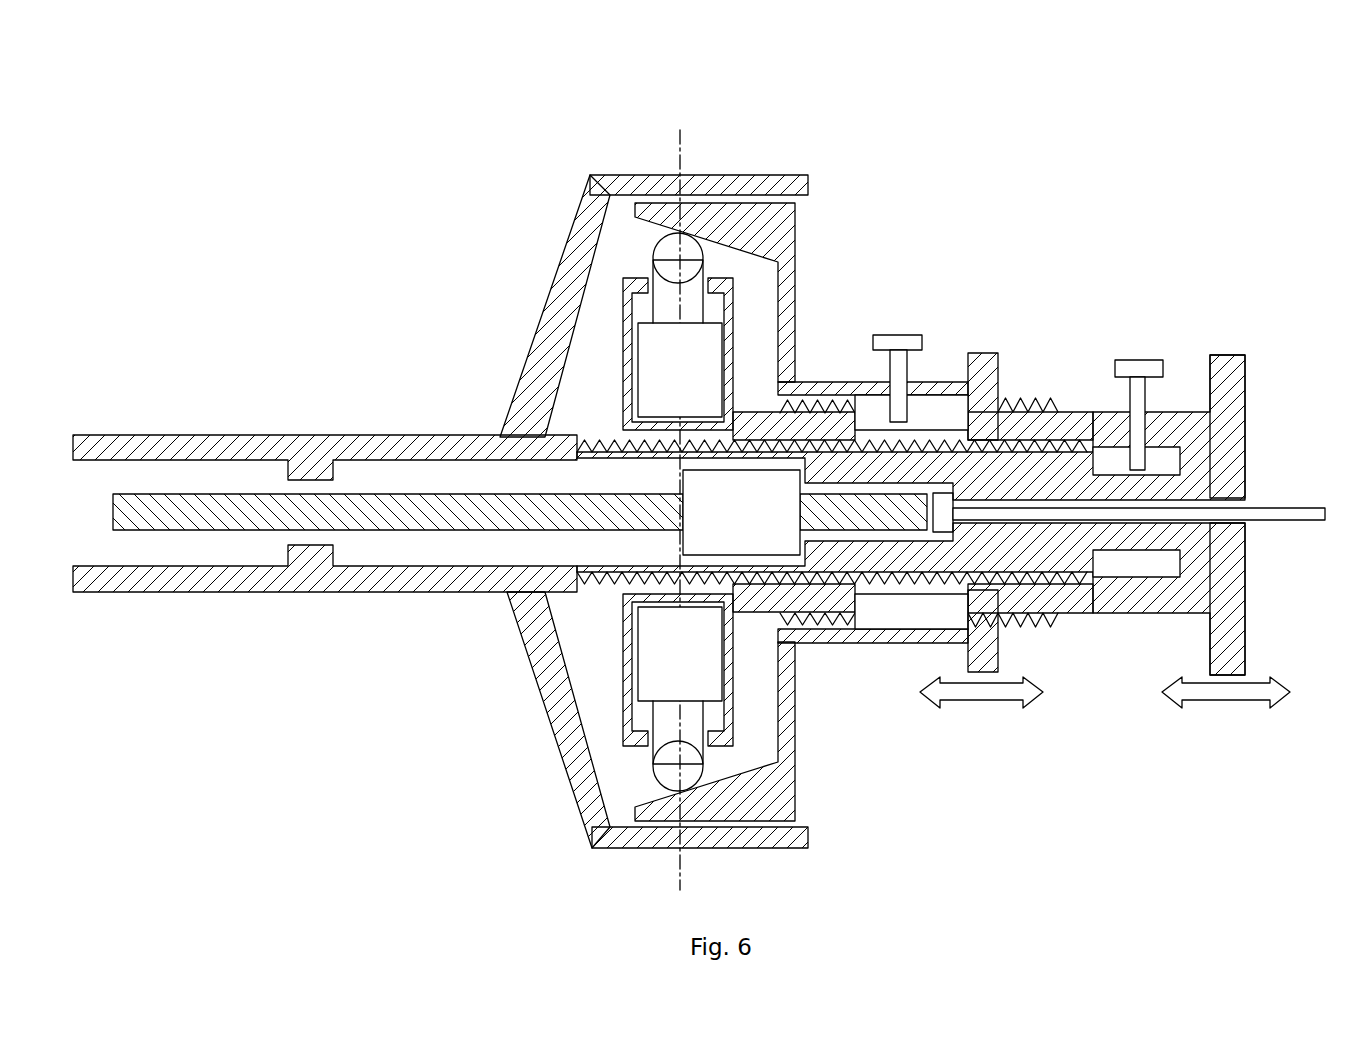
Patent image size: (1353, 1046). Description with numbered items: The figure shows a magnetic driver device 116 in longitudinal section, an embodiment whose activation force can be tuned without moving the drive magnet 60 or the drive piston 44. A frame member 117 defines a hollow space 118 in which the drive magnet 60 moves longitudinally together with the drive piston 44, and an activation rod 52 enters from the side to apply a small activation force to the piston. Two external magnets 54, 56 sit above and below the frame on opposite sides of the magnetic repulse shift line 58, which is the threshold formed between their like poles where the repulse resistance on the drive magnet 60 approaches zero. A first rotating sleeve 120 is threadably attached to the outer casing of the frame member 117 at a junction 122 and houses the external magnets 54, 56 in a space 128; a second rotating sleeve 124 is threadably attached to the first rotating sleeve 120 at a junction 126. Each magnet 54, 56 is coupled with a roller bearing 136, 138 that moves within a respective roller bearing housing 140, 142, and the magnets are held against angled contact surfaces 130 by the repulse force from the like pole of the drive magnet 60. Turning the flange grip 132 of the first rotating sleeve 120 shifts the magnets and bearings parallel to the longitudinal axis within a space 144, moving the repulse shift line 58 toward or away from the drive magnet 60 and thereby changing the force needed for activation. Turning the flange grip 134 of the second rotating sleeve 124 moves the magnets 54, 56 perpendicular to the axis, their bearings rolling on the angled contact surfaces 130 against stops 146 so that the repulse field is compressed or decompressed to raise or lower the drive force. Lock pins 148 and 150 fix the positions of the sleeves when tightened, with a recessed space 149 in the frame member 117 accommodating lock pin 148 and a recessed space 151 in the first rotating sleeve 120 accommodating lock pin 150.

The magnetic driver device 116 is at (382, 100).
The magnetic repulse shift line 58 is at (690, 152).
The second rotating sleeve 124 is at (757, 213).
The frame member 117 is at (537, 412).
The angled contact surfaces 130 is at (743, 258).
The roller bearing 136 is at (655, 250).
The roller bearing housing 140 is at (663, 310).
The stops 146 is at (723, 287).
The external magnet 54 is at (652, 360).
The space 128 is at (713, 317).
The space 144 is at (587, 390).
The hollow space 118 is at (385, 488).
The drive magnet 60 is at (777, 492).
The lock pin 150 is at (900, 335).
The recessed space 151 is at (920, 400).
The flange grip 134 is at (985, 353).
The lock pin 148 is at (1135, 360).
The flange grip 132 is at (1225, 355).
The recessed space 149 is at (1160, 465).
The activation rod 52 is at (1260, 510).
The drive piston 44 is at (213, 520).
The junction 122 is at (575, 583).
The external magnet 56 is at (650, 655).
The first rotating sleeve 120 is at (800, 598).
The junction 126 is at (793, 602).
The roller bearing housing 142 is at (665, 722).
The roller bearing 138 is at (665, 772).